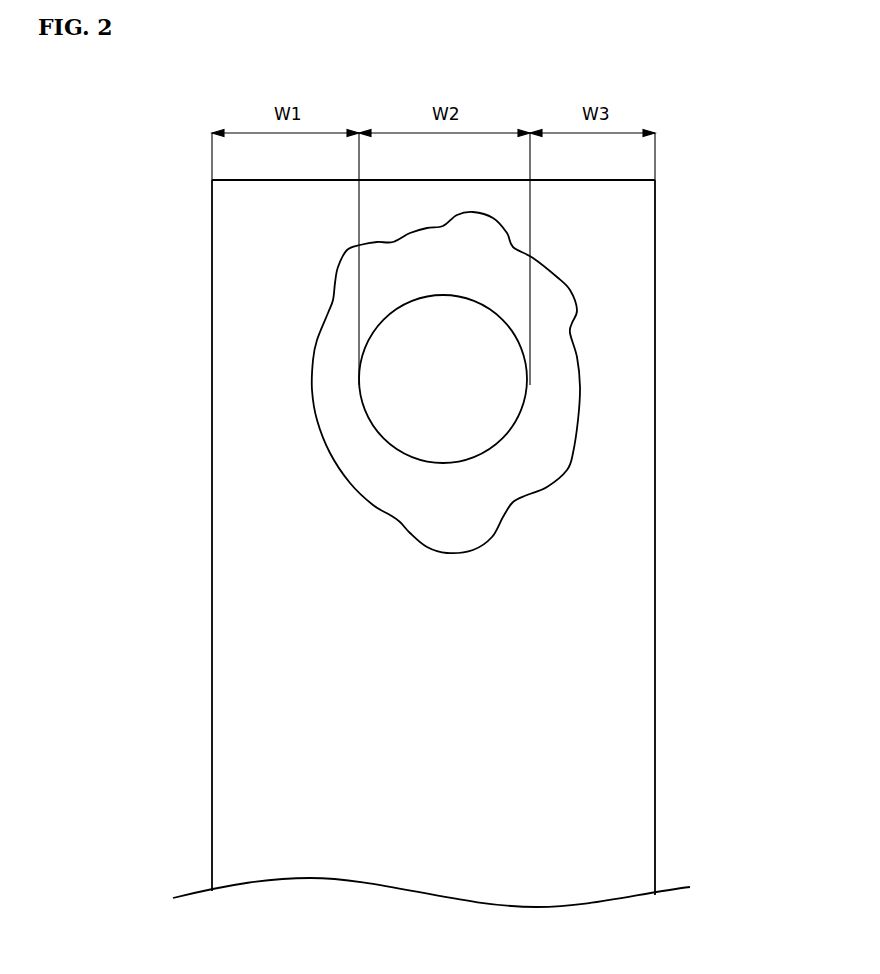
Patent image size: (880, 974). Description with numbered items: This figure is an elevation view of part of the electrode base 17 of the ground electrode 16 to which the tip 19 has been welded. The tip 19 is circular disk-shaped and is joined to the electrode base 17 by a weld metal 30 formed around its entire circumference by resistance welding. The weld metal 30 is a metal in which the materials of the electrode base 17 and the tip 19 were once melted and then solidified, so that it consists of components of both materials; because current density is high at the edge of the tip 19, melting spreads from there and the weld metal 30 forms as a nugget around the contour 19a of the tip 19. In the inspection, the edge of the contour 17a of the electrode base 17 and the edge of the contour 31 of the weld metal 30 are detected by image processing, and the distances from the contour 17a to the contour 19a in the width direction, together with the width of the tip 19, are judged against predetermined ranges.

The ground electrode 16 is at (685, 170).
The electrode base 17 is at (640, 257).
The contour of the electrode base 17a is at (655, 452).
The tip 19 is at (423, 315).
The contour of the tip 19a is at (422, 462).
The weld metal 30 is at (550, 460).
The contour of the weld metal 31 is at (490, 537).